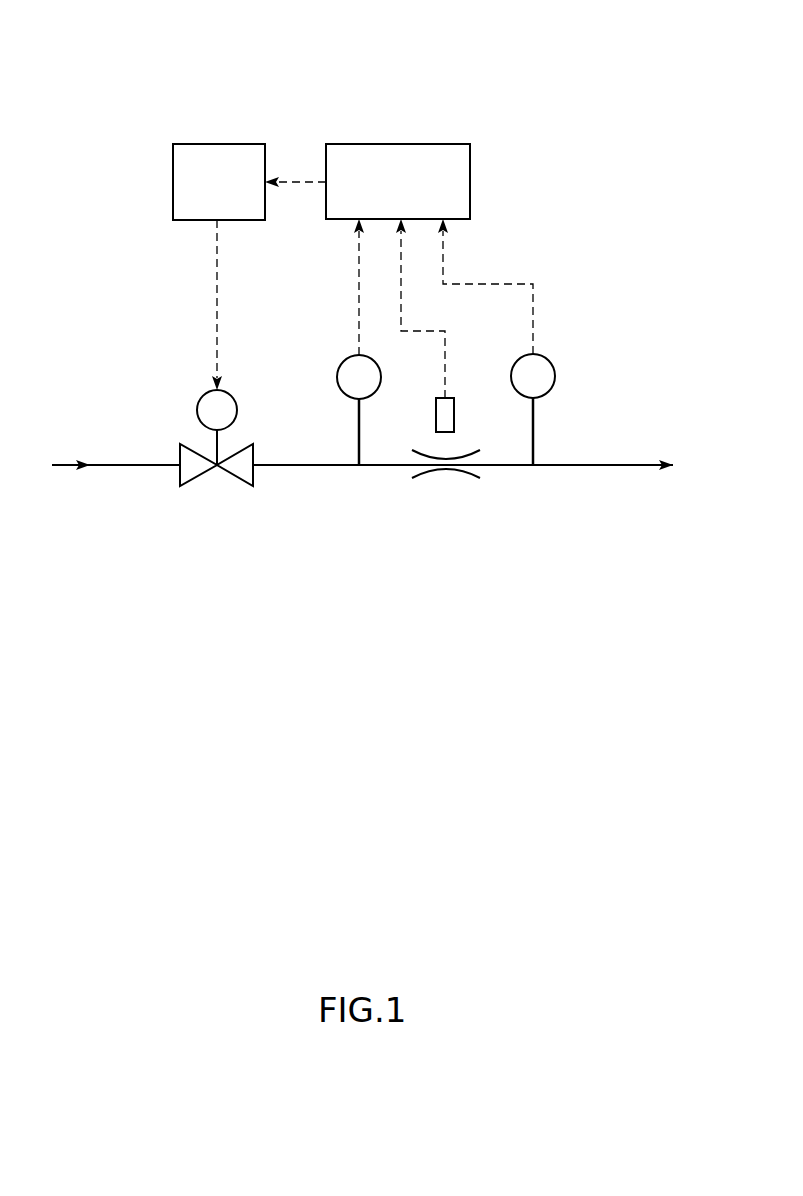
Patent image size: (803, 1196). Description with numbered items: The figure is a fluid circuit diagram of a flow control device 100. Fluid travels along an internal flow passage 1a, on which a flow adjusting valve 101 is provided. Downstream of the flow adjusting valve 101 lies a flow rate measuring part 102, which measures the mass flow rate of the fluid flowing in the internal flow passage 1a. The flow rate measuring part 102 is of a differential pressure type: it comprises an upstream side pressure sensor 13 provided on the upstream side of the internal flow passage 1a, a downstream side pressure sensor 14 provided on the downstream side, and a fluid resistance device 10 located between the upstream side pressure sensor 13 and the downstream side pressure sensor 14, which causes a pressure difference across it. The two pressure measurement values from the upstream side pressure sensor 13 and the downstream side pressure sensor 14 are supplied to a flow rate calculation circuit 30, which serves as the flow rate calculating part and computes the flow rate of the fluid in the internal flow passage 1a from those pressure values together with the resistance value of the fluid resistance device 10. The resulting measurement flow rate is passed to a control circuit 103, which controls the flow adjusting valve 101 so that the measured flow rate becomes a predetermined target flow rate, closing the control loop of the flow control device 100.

The internal flow passage 1a is at (123, 457).
The flow control device 100 is at (120, 120).
The flow rate measuring part 102 is at (552, 238).
The control circuit 103 is at (215, 144).
The flow rate calculation circuit 30 is at (470, 173).
The flow adjusting valve 101 is at (203, 393).
The upstream side pressure sensor 13 is at (339, 360).
The downstream side pressure sensor 14 is at (557, 370).
The fluid resistance device 10 is at (457, 478).